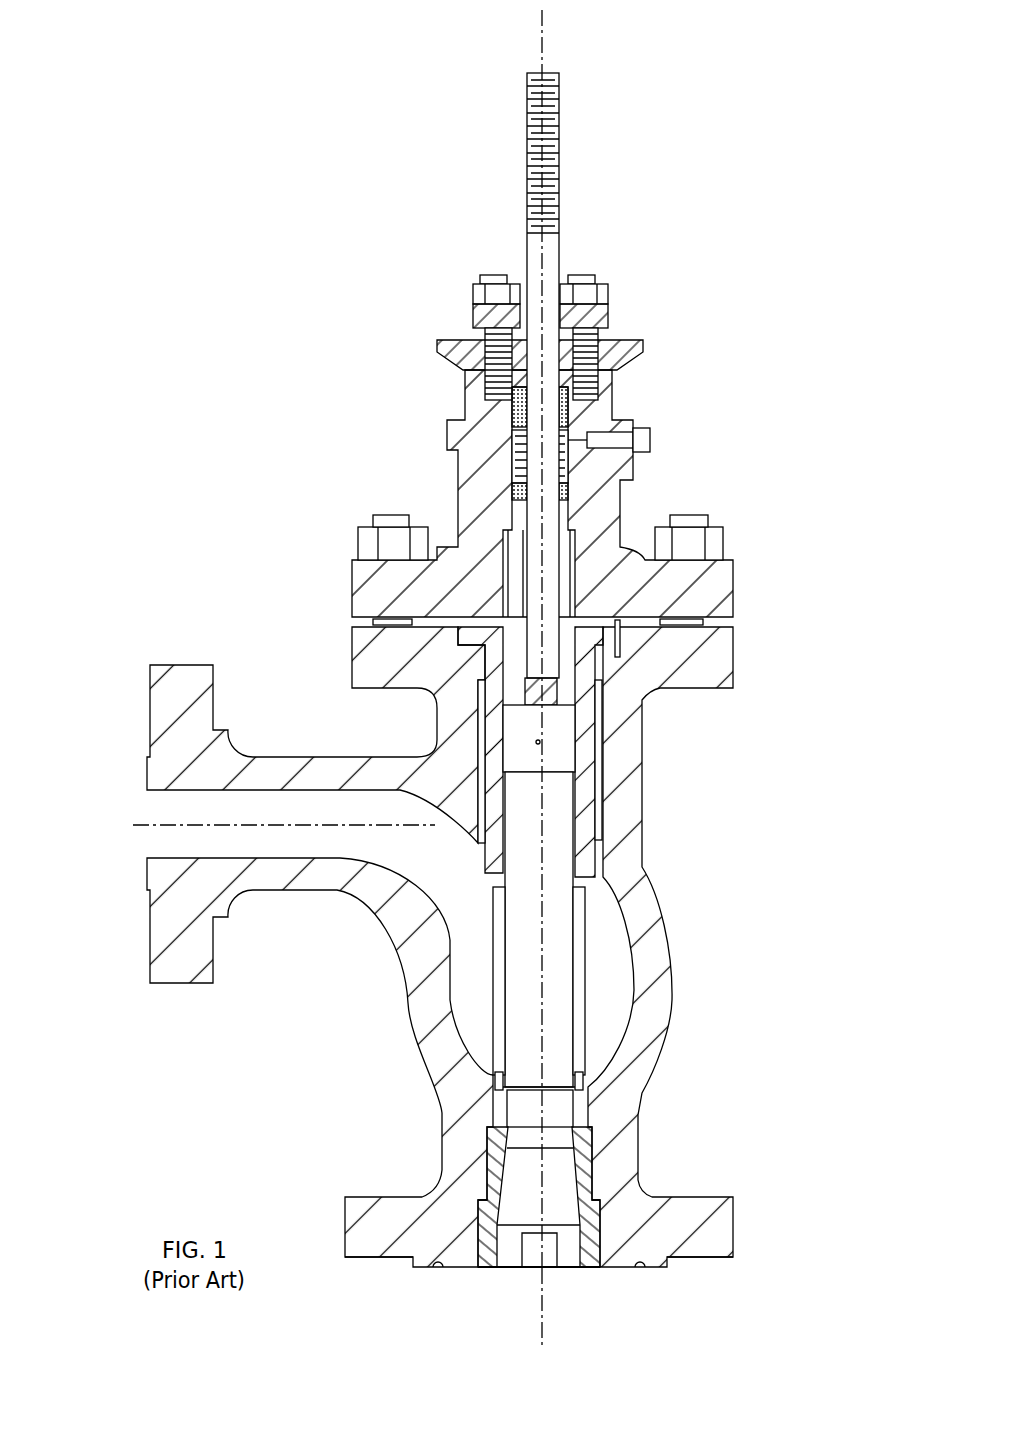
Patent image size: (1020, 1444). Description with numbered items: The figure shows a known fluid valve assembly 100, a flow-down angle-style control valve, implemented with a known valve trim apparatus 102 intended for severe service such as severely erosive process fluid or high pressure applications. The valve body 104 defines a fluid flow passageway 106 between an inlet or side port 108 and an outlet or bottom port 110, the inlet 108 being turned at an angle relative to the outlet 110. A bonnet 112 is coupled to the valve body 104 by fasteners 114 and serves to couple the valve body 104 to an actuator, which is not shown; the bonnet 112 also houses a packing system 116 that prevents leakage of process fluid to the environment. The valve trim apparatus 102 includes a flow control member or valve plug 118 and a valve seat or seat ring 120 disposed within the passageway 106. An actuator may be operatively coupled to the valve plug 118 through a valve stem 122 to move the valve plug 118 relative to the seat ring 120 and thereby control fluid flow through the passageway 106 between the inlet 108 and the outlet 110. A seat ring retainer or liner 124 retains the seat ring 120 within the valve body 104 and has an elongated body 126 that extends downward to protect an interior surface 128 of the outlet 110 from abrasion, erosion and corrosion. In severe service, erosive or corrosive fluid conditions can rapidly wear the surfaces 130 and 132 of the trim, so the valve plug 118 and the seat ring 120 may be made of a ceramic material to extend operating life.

The fluid valve assembly 100 is at (677, 123).
The valve trim apparatus 102 is at (676, 1048).
The valve body 104 is at (680, 925).
The fluid flow passageway 106 is at (450, 872).
The inlet 108 is at (148, 805).
The outlet 110 is at (546, 1268).
The bonnet 112 is at (725, 590).
The fasteners 114 is at (383, 512).
The packing system 116 is at (578, 415).
The valve plug 118 is at (528, 1112).
The seat ring 120 is at (578, 1117).
The valve stem 122 is at (553, 252).
The seat ring retainer 124 is at (485, 1203).
The elongated body 126 is at (598, 1203).
The interior surface 128 is at (650, 1240).
The surface 130 is at (583, 1088).
The surface 132 is at (500, 1090).